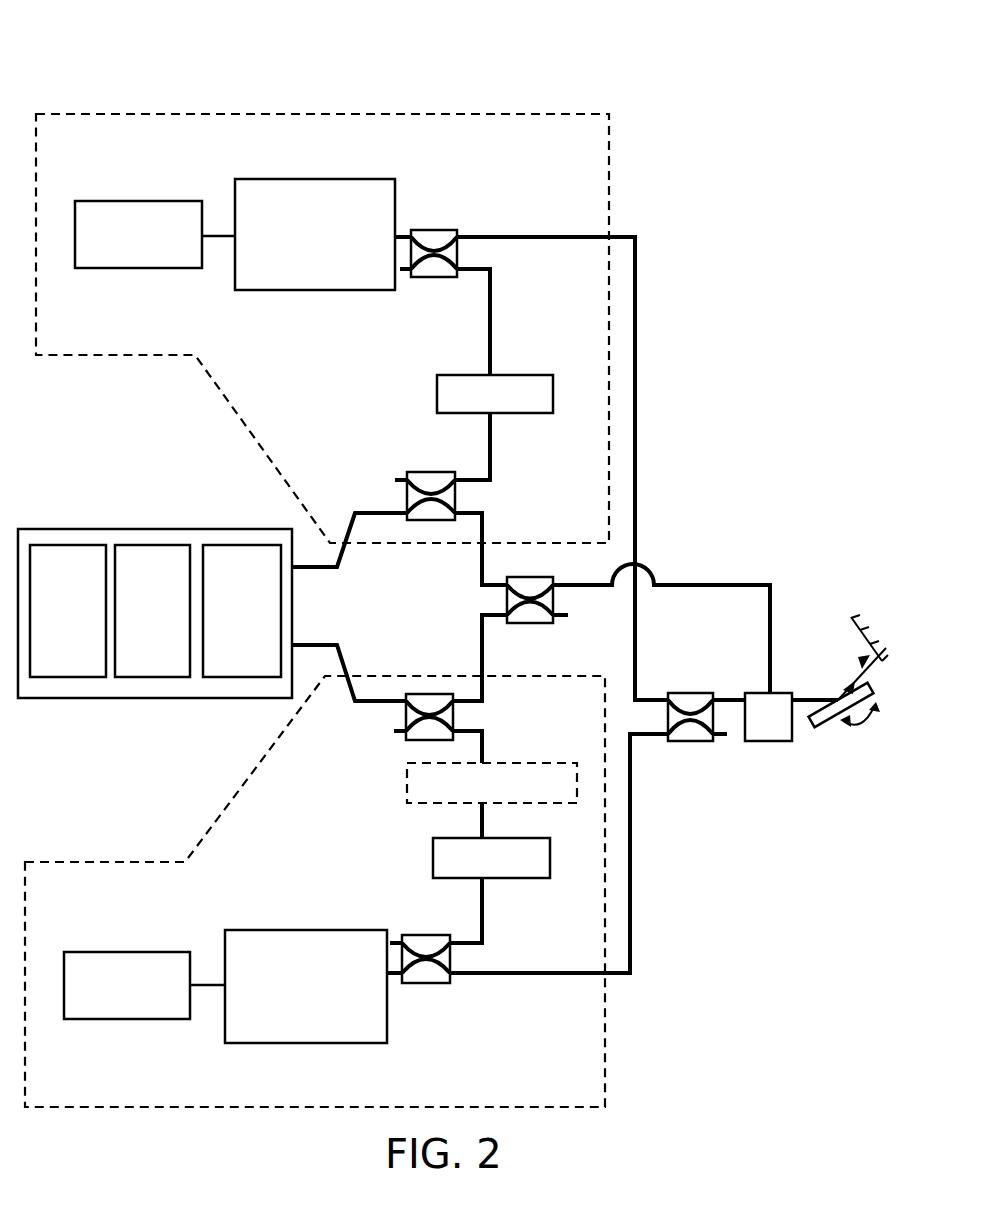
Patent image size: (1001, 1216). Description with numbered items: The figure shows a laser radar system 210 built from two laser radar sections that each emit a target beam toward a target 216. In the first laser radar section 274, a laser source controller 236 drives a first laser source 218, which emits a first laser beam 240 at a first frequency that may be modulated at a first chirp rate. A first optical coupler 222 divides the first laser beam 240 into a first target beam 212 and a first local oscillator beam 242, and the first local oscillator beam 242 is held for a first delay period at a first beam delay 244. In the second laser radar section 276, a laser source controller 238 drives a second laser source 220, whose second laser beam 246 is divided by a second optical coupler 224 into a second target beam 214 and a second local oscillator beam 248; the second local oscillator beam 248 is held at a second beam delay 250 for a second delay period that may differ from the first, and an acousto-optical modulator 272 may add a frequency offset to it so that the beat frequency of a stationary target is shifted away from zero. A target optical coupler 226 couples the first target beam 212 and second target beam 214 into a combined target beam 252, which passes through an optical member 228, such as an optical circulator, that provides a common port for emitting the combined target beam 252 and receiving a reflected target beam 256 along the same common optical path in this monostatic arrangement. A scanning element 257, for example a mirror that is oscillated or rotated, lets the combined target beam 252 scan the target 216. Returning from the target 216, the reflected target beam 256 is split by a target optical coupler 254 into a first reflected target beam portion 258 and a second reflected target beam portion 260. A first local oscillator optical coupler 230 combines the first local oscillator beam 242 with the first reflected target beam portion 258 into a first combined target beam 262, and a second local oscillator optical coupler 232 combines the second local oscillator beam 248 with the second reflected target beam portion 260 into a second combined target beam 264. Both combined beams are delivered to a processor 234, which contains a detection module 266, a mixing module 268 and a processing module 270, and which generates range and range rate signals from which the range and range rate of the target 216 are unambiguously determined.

The laser radar system 210 is at (58, 72).
The first target beam 212 is at (637, 410).
The second target beam 214 is at (520, 976).
The target 216 is at (840, 612).
The first laser source 218 is at (308, 179).
The second laser source 220 is at (308, 930).
The first optical coupler 222 is at (446, 230).
The second optical coupler 224 is at (422, 935).
The target optical coupler 226 is at (692, 693).
The optical member 228 is at (783, 693).
The first local oscillator optical coupler 230 is at (431, 472).
The second local oscillator optical coupler 232 is at (428, 694).
The processor 234 is at (26, 529).
The laser source controller 236 is at (128, 201).
The laser source controller 238 is at (110, 952).
The first laser beam 240 is at (404, 232).
The first local oscillator beam 242 is at (494, 299).
The first beam delay 244 is at (519, 375).
The second laser beam 246 is at (392, 977).
The second local oscillator beam 248 is at (486, 941).
The second beam delay 250 is at (525, 878).
The combined target beam 252 is at (733, 697).
The target optical coupler 254 is at (505, 600).
The reflected target beam 256 is at (735, 582).
The scanning element 257 is at (845, 720).
The first reflected target beam portion 258 is at (486, 526).
The second reflected target beam portion 260 is at (485, 645).
The first combined target beam 262 is at (349, 527).
The second combined target beam 264 is at (348, 707).
The detection module 266 is at (240, 545).
The mixing module 268 is at (155, 545).
The processing module 270 is at (70, 545).
The acousto-optical modulator 272 is at (543, 762).
The first laser radar section 274 is at (612, 176).
The second laser radar section 276 is at (607, 1043).